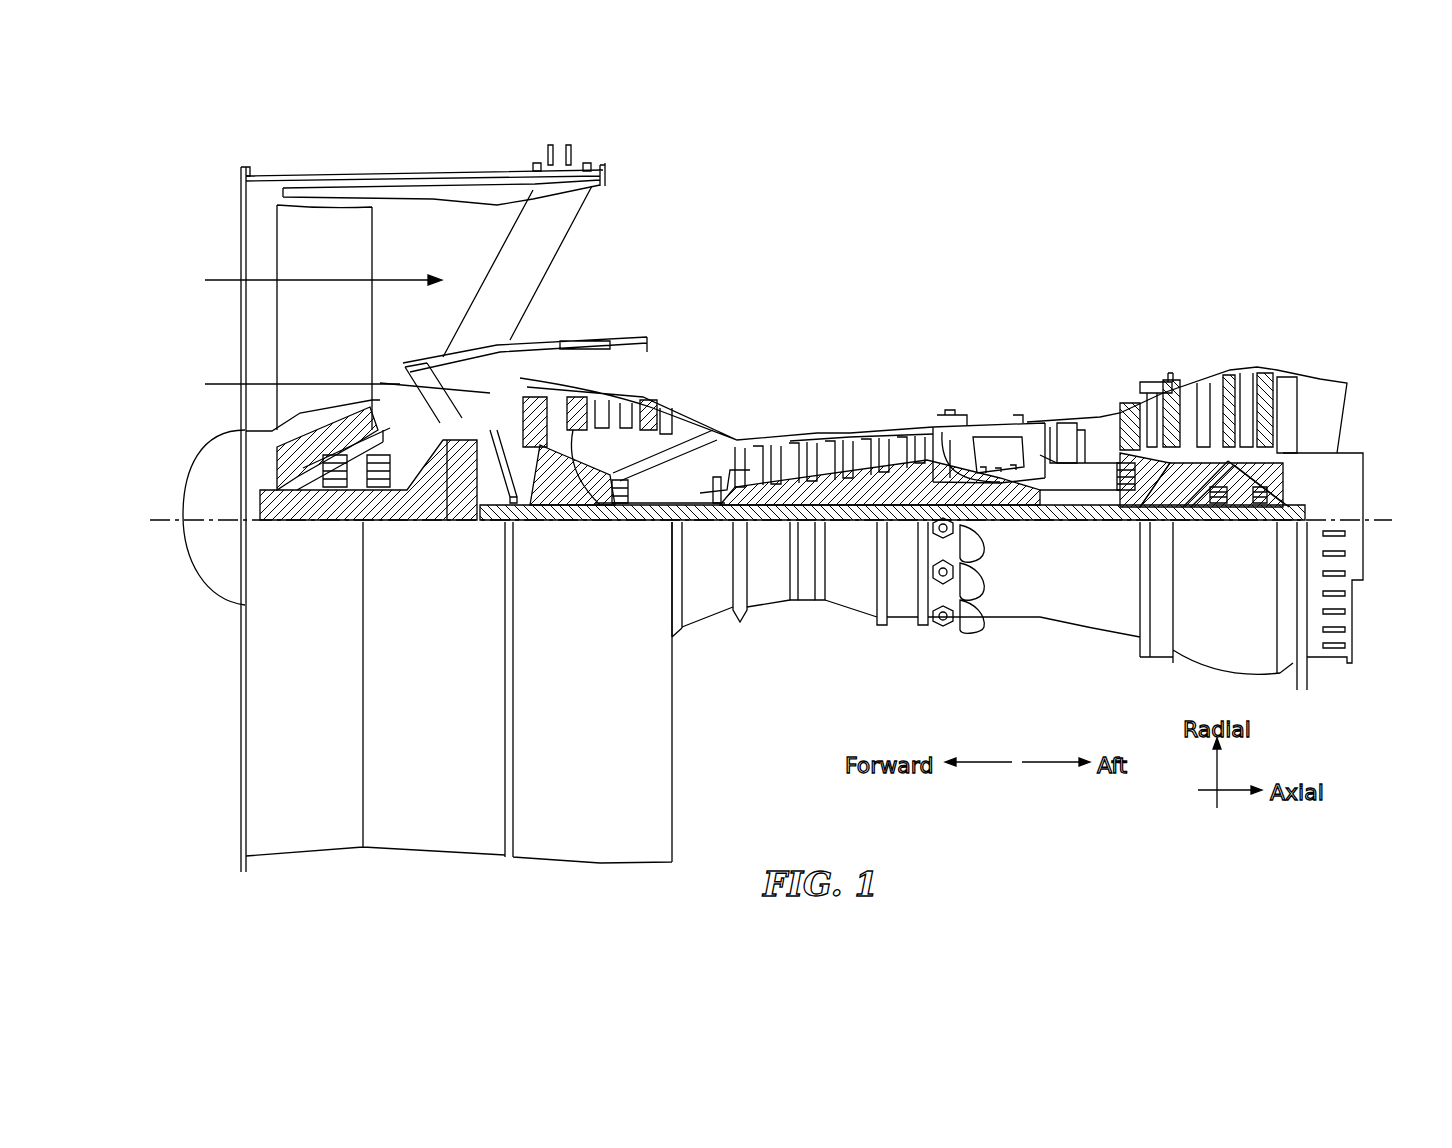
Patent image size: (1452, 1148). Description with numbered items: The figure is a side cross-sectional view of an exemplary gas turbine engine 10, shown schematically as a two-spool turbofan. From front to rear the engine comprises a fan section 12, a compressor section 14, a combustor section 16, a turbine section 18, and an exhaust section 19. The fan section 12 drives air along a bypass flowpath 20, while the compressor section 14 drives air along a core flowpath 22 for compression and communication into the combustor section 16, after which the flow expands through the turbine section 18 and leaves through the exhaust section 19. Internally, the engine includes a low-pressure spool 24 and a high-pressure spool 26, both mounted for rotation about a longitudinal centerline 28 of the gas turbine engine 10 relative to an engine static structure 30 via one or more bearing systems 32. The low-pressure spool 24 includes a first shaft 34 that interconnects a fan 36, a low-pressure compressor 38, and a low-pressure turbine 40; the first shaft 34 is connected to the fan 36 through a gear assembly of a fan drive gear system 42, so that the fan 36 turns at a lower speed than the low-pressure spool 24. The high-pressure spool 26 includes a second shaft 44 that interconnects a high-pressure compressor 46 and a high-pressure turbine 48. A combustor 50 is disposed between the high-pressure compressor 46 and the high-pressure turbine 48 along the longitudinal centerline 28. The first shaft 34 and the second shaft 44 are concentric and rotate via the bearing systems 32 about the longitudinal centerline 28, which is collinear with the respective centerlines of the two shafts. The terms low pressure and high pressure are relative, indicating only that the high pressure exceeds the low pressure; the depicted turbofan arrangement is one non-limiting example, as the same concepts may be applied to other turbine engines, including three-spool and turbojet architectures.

The gas turbine engine 10 is at (1108, 228).
The fan section 12 is at (235, 155).
The compressor section 14 is at (515, 300).
The combustor section 16 is at (930, 300).
The turbine section 18 is at (1290, 300).
The exhaust section 19 is at (1405, 300).
The bypass flowpath 20 is at (212, 280).
The core flowpath 22 is at (212, 384).
The low-pressure spool 24 is at (857, 522).
The high-pressure spool 26 is at (817, 500).
The longitudinal centerline 28 is at (1385, 520).
The engine static structure 30 is at (907, 625).
The bearing systems 32 is at (1127, 495).
The first shaft 34 is at (695, 524).
The fan 36 is at (330, 327).
The low-pressure compressor 38 is at (613, 403).
The low-pressure turbine 40 is at (1217, 380).
The fan drive gear system 42 is at (462, 530).
The second shaft 44 is at (1045, 522).
The high-pressure compressor 46 is at (817, 437).
The high-pressure turbine 48 is at (1070, 417).
The combustor 50 is at (985, 457).